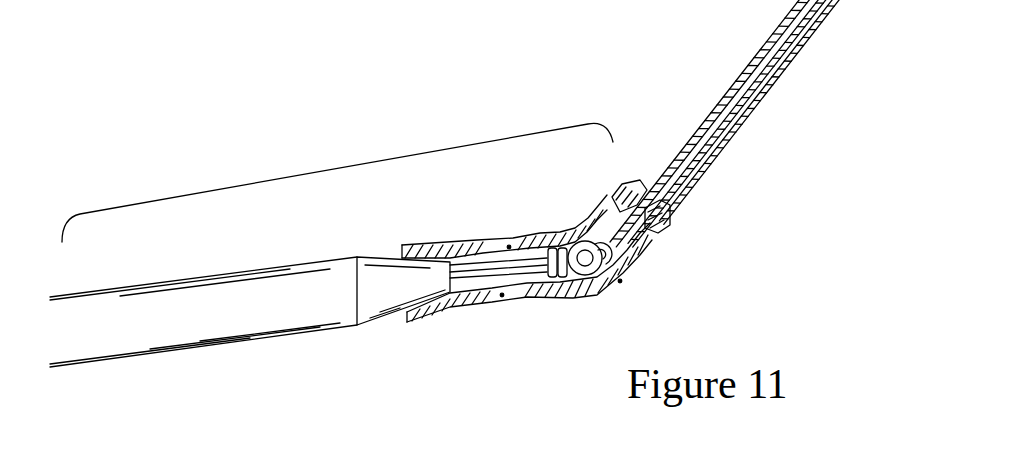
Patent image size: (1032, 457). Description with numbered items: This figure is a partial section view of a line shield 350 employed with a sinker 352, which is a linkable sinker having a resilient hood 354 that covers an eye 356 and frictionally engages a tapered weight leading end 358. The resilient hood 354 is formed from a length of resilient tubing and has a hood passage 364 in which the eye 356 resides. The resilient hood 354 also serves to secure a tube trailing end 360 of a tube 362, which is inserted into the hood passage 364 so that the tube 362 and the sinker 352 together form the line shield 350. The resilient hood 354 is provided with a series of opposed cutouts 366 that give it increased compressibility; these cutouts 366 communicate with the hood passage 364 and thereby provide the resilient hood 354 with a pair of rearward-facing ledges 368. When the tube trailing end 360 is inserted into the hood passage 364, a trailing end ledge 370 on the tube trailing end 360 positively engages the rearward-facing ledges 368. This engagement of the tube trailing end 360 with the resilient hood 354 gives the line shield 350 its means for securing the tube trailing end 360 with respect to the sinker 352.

The line shield 350 is at (651, 120).
The sinker 352 is at (333, 168).
The resilient hood 354 is at (446, 238).
The eye 356 is at (580, 278).
The tapered weight leading end 358 is at (375, 268).
The tube trailing end 360 is at (596, 206).
The tube 362 is at (734, 146).
The hood passage 364 is at (518, 282).
The cutouts 366 is at (502, 295).
The rearward-facing ledges 368 is at (600, 217).
The trailing end ledge 370 is at (670, 217).